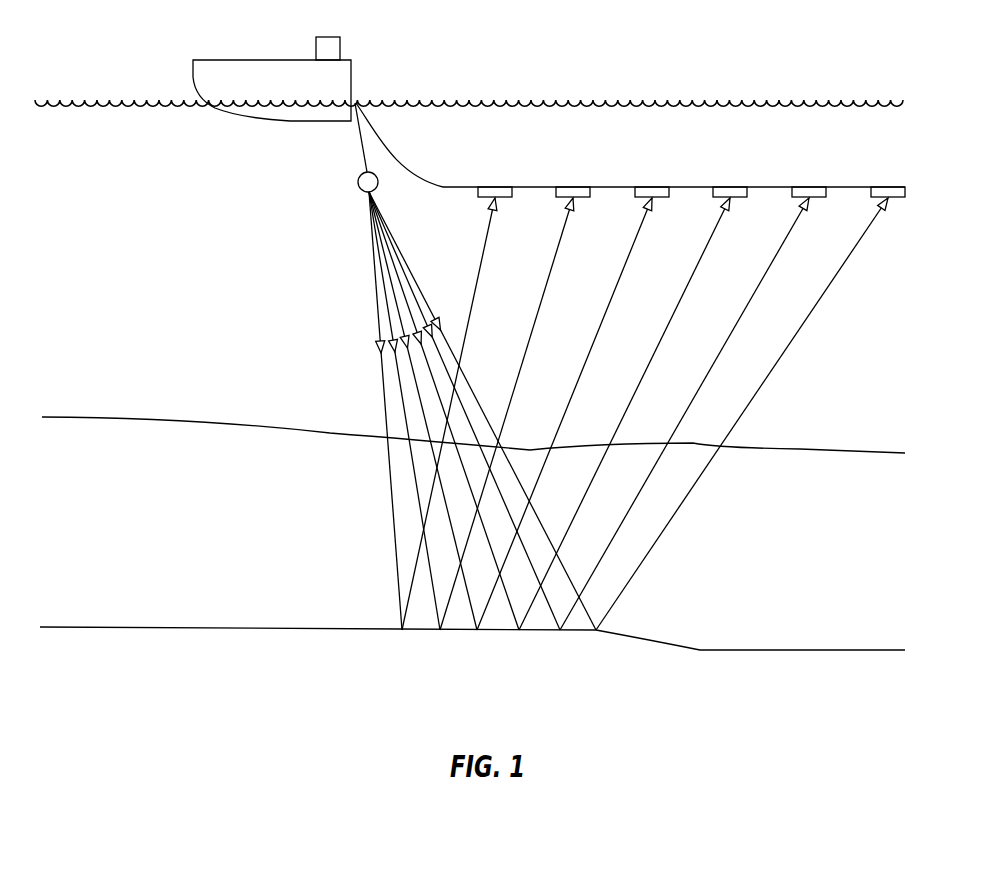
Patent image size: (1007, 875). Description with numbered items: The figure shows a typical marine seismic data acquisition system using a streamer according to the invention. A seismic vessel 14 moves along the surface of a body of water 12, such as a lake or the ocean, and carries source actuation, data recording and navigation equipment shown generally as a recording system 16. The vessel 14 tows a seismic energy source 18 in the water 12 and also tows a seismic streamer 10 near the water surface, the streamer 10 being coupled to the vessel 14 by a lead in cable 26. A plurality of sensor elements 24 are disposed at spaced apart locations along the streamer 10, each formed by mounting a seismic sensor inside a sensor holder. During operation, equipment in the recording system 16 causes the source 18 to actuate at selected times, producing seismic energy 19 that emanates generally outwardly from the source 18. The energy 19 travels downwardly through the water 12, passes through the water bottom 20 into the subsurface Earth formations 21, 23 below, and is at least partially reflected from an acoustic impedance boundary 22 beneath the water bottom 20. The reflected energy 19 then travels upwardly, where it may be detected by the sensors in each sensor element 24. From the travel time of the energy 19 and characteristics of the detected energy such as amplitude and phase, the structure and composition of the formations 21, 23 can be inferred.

The seismic streamer 10 is at (451, 197).
The body of water 12 is at (199, 251).
The seismic vessel 14 is at (267, 60).
The recording system 16 is at (327, 37).
The seismic energy source 18 is at (358, 180).
The seismic energy 19 is at (378, 292).
The water bottom 20 is at (113, 417).
The subsurface Earth formation 21 is at (199, 524).
The acoustic impedance boundary 22 is at (115, 627).
The subsurface Earth formation 23 is at (199, 693).
The sensor element 24 is at (495, 187).
The lead in cable 26 is at (398, 160).